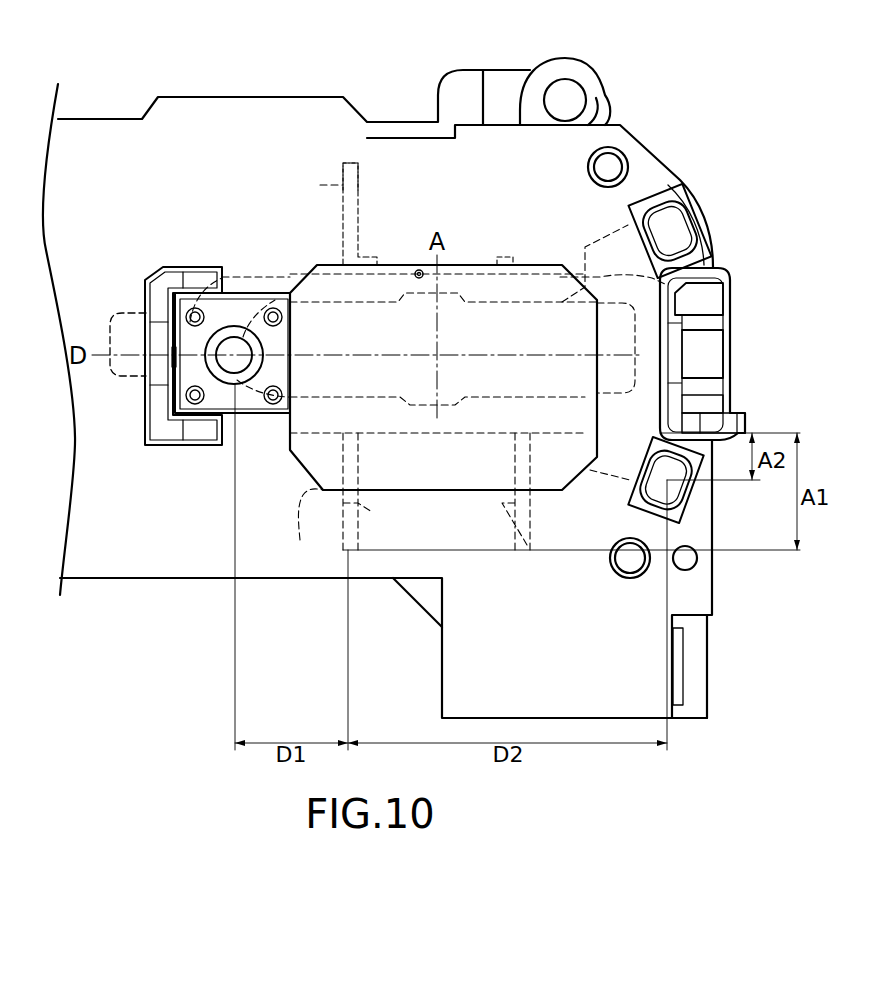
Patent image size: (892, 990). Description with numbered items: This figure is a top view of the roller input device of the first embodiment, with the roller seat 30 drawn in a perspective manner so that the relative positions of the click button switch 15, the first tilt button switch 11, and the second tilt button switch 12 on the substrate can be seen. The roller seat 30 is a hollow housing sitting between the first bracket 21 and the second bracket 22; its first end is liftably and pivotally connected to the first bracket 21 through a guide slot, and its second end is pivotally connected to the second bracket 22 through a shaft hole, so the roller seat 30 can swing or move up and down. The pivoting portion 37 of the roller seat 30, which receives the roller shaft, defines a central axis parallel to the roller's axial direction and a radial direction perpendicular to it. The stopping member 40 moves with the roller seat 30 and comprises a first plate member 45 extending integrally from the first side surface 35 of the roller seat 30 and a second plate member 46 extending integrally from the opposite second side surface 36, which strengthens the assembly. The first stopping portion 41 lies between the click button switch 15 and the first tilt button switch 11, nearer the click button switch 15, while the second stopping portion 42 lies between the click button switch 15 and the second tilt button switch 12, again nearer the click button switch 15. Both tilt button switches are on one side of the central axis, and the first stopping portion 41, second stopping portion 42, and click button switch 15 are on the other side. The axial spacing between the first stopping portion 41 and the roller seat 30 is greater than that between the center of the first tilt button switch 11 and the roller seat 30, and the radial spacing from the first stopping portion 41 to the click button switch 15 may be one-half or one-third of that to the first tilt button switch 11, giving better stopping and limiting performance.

The first tilt button switch 11 is at (677, 510).
The second tilt button switch 12 is at (677, 240).
The click button switch 15 is at (232, 362).
The first bracket 21 is at (167, 447).
The second bracket 22 is at (676, 307).
The roller seat 30 is at (675, 376).
The first side surface 35 is at (290, 450).
The second side surface 36 is at (676, 283).
The pivoting portion 37 is at (420, 405).
The stopping member 40 is at (288, 633).
The first stopping portion 41 is at (346, 550).
The second stopping portion 42 is at (347, 163).
The first plate member 45 is at (300, 540).
The second plate member 46 is at (320, 185).